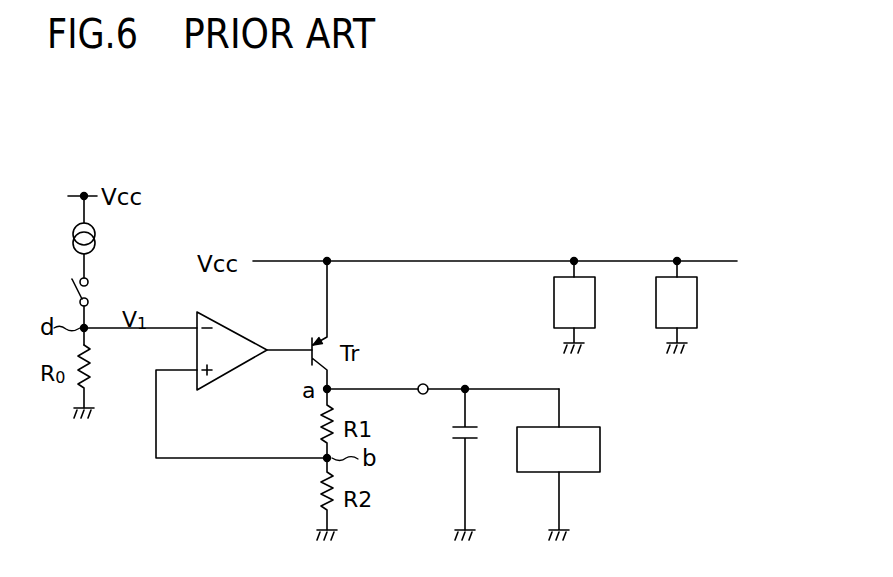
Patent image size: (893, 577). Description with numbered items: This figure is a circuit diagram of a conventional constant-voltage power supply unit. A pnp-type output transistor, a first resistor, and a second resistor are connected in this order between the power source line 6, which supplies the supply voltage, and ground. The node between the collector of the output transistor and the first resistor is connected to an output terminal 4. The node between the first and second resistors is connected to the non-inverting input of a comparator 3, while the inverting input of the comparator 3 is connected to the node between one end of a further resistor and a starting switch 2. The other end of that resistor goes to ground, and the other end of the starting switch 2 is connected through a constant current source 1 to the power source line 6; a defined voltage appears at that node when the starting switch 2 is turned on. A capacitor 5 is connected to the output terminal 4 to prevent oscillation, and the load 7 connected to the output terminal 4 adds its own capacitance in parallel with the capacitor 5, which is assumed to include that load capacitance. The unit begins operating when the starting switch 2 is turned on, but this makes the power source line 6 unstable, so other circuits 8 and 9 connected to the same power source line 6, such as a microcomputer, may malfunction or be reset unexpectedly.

The constant current source 1 is at (96, 238).
The starting switch 2 is at (70, 290).
The comparator 3 is at (237, 343).
The output terminal 4 is at (423, 384).
The capacitor 5 is at (454, 439).
The power source line 6 is at (370, 261).
The load 7 is at (601, 447).
The other circuit 8 is at (554, 303).
The other circuit 9 is at (697, 300).